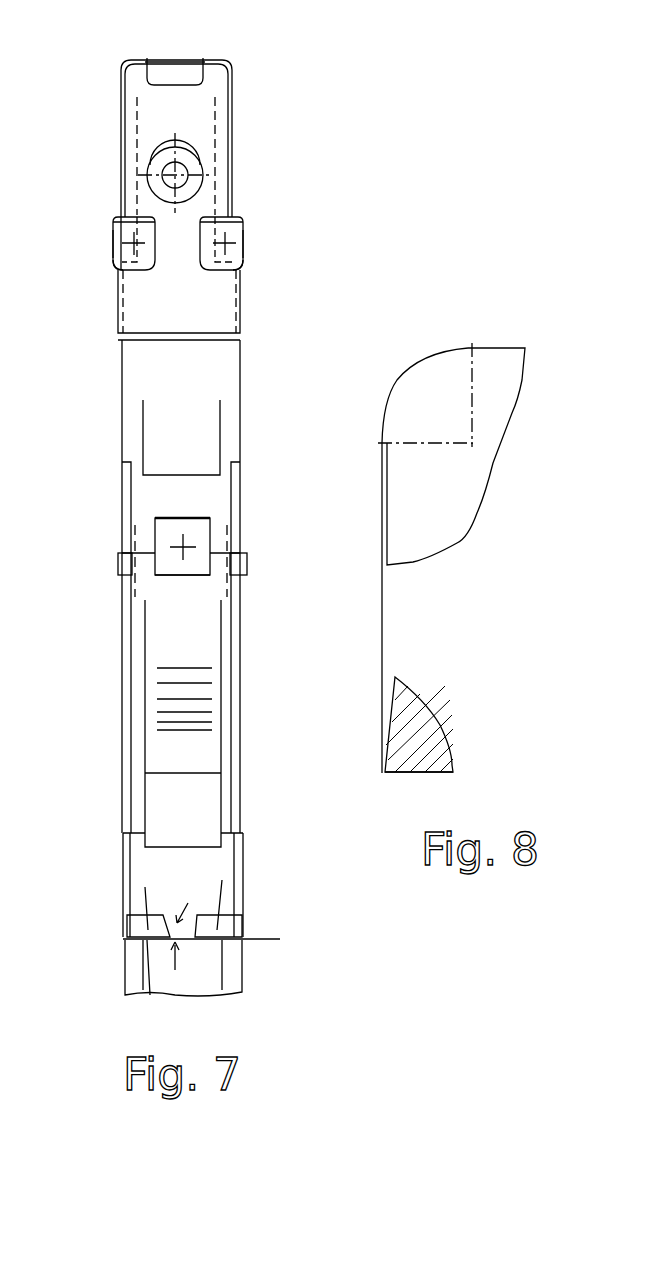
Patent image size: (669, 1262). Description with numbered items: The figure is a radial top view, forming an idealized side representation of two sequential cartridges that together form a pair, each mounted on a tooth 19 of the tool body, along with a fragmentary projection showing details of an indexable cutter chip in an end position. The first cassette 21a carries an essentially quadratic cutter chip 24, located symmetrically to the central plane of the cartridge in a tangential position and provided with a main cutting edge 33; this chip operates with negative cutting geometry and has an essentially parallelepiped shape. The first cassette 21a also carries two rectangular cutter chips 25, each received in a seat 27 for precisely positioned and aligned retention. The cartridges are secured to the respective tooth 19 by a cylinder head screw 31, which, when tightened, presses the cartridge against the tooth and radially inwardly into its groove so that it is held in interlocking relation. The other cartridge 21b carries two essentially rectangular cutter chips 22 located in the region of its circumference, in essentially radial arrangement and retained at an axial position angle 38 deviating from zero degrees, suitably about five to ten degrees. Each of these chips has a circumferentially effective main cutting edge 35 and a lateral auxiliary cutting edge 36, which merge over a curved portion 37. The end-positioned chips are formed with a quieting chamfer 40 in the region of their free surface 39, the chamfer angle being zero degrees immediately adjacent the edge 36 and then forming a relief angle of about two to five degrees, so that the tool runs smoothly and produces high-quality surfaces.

In FIG. 7, the tooth 19 is at (202, 435).
In FIG. 7, the first cassette 21a is at (222, 117).
In FIG. 7, the other cartridge 21b is at (163, 863).
In FIG. 7, the cutter chip 22 is at (133, 915).
In FIG. 7, the cutter chip 24 is at (183, 67).
In FIG. 7, the cutter chip 25 is at (127, 230).
In FIG. 7, the seat 27 is at (177, 519).
In FIG. 7, the cylinder head screw 31 is at (193, 163).
In FIG. 7, the main cutting edge 33 is at (163, 58).
In FIG. 7, the main cutting edge 35 is at (135, 217).
In FIG. 8, the main cutting edge 35 is at (498, 345).
In FIG. 7, the auxiliary cutting edge 36 is at (113, 227).
In FIG. 8, the auxiliary cutting edge 36 is at (382, 527).
In FIG. 7, the curved portion 37 is at (115, 222).
In FIG. 8, the curved portion 37 is at (417, 367).
In FIG. 7, the axial position angle 38 is at (175, 940).
In FIG. 8, the free surface 39 is at (390, 712).
In FIG. 8, the quieting chamfer 40 is at (385, 767).